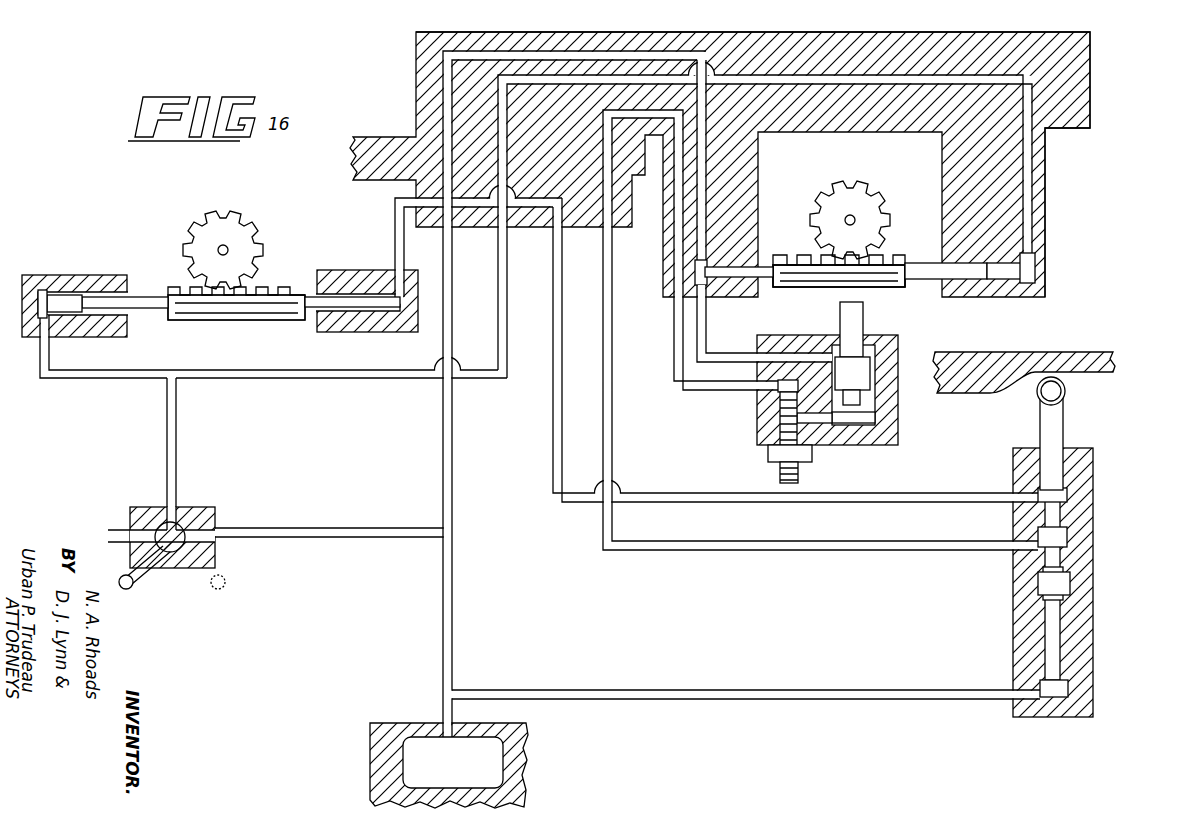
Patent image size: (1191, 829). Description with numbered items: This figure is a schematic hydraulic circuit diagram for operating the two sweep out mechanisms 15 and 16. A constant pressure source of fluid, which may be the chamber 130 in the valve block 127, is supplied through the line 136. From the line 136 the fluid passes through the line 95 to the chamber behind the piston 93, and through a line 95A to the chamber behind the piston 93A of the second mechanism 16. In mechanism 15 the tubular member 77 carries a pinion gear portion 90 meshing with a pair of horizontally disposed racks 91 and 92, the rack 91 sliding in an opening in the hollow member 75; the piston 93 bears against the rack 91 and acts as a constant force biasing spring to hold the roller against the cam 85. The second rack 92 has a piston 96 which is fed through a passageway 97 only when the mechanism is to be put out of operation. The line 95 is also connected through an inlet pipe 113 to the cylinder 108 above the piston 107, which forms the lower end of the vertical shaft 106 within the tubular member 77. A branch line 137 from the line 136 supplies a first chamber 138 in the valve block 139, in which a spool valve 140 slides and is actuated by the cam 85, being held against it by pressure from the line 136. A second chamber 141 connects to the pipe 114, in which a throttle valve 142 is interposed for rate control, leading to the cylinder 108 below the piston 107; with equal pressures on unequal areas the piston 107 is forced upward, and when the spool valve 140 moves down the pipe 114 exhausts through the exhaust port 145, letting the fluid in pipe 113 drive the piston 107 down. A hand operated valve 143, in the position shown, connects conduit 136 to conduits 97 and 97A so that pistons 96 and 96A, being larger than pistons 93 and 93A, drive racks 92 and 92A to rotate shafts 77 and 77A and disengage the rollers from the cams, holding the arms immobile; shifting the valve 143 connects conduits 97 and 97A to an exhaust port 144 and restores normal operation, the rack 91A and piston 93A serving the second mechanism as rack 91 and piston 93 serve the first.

The hollow member 75 is at (1072, 70).
The line 95 is at (706, 154).
The tubular member 77 is at (853, 217).
The pinion gear portion 90 is at (873, 218).
The passageway 97 is at (1025, 193).
The sweep out mechanism 15 is at (1068, 229).
The piston 96 is at (928, 270).
The piston 93 is at (745, 278).
The inlet pipe 113 is at (708, 342).
The inlet pipe 114 is at (698, 388).
The vertical shaft 106 is at (862, 315).
The piston 107 is at (862, 380).
The cylinder portion 108 is at (880, 384).
The throttle valve 142 is at (770, 452).
The rack 91 is at (795, 288).
The rack 92 is at (839, 298).
The cam 85 is at (1100, 355).
The spool valve 140 is at (1052, 428).
The first chamber 138 is at (1067, 491).
The valve block 139 is at (1080, 520).
The second chamber 141 is at (1068, 537).
The exhaust port 145 is at (1072, 580).
The line 136 is at (452, 641).
The chamber 130 is at (405, 765).
The valve block 127 is at (515, 779).
The hand operated valve 143 is at (168, 560).
The exhaust port 144 is at (110, 536).
The sweep out mechanism 16 is at (163, 239).
The shaft 77A is at (226, 248).
The line 95A is at (393, 212).
The piston 96A is at (140, 307).
The conduit 97A is at (44, 362).
The rack 91A is at (245, 318).
The rack 92A is at (236, 327).
The piston 93A is at (372, 306).
The branch line 137 is at (557, 322).